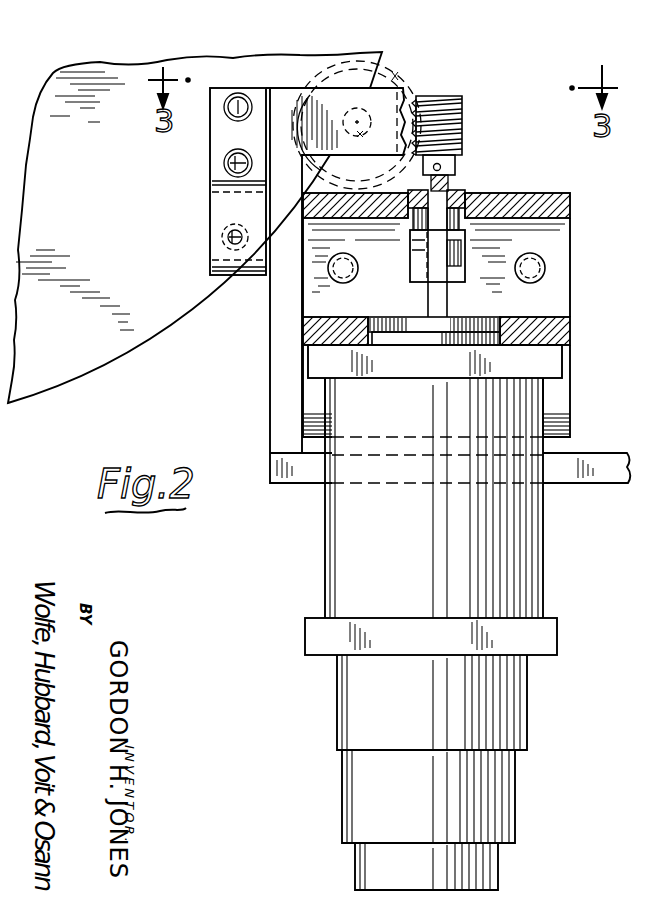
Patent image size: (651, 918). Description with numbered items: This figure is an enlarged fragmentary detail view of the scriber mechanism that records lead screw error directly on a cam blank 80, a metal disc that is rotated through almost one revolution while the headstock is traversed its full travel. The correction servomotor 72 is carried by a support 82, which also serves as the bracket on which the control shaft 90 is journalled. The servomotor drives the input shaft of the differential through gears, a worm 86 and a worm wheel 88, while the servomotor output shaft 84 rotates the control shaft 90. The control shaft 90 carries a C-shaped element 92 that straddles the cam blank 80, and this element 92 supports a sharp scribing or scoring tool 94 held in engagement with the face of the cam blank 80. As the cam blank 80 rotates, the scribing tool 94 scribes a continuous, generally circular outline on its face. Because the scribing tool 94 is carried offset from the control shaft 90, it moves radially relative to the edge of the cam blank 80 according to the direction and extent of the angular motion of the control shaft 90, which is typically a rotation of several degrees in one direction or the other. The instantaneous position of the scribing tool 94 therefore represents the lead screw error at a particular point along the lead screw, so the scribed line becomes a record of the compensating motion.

The correction servomotor 72 is at (340, 720).
The cam blank 80 is at (86, 375).
The support 82 is at (562, 412).
The servomotor output shaft 84 is at (430, 297).
The worm 86 is at (464, 108).
The worm wheel 88 is at (393, 78).
The control shaft 90 is at (357, 145).
The C-shaped element 92 is at (283, 150).
The scribing tool 94 is at (222, 235).